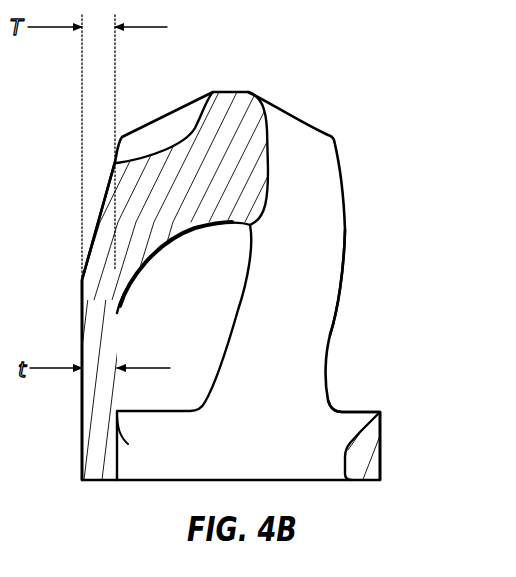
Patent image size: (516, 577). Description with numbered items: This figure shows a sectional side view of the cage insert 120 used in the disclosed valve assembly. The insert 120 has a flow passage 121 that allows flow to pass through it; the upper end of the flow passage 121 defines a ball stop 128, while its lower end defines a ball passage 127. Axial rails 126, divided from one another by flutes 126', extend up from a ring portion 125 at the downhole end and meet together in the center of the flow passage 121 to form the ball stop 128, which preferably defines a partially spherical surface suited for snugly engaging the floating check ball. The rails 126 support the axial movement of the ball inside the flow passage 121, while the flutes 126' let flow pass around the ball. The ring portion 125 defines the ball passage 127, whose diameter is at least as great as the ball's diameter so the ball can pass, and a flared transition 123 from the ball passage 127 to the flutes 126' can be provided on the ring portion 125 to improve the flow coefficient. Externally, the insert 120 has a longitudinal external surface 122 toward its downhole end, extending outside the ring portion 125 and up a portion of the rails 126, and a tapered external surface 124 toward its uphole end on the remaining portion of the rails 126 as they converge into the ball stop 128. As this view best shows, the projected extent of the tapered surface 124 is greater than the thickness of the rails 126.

The cage insert 120 is at (345, 103).
The flow passage 121 is at (281, 150).
The longitudinal external surface 122 is at (81, 313).
The flared transition 123 is at (368, 411).
The tapered external surface 124 is at (100, 221).
The ring portion 125 is at (383, 449).
The axial rails 126 is at (373, 282).
The flutes 126' is at (270, 352).
The ball passage 127 is at (126, 463).
The ball stop 128 is at (214, 228).